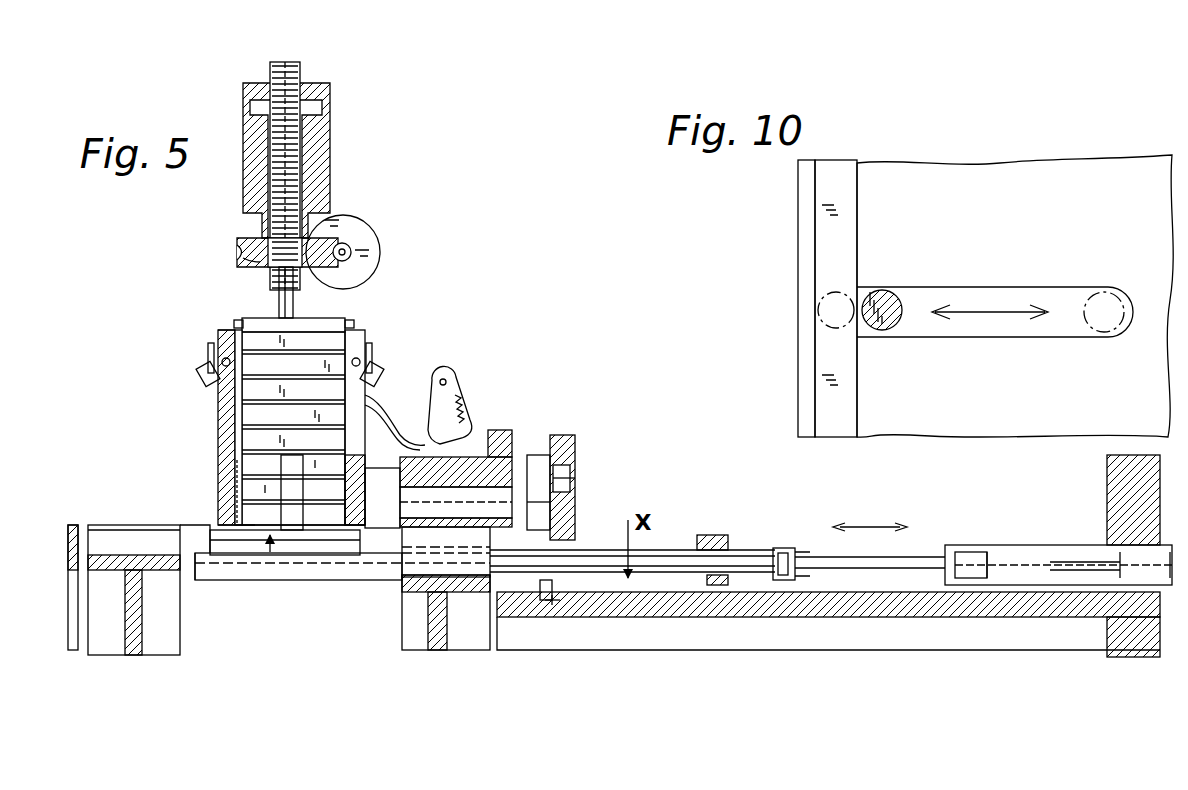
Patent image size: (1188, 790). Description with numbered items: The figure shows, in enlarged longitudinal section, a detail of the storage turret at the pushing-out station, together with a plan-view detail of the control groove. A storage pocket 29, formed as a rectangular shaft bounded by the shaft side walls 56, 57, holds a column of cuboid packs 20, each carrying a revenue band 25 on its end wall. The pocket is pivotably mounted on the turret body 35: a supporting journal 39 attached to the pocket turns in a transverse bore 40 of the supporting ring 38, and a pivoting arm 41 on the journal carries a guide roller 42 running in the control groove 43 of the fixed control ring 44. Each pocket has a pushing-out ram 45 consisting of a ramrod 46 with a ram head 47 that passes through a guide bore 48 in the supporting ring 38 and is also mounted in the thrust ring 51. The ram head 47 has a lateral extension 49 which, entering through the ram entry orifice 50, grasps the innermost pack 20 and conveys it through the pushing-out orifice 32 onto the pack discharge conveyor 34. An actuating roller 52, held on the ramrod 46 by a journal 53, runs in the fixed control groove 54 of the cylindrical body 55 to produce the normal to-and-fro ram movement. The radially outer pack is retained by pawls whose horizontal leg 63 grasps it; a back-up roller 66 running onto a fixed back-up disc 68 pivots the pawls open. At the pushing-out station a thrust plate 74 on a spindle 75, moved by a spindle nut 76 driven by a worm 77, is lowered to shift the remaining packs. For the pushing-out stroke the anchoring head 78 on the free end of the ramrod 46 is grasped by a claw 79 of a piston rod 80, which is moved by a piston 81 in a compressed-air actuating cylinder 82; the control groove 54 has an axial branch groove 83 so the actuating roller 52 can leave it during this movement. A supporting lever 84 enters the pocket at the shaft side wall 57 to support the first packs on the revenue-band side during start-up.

In FIG. 5, the cuboid pack 20 is at (250, 447).
In FIG. 5, the revenue band 25 is at (365, 345).
In FIG. 5, the storage pocket 29 is at (162, 382).
In FIG. 5, the pushing-out orifice 32 is at (238, 526).
In FIG. 5, the pack discharge conveyor 34 is at (103, 565).
In FIG. 5, the turret body 35 is at (546, 352).
In FIG. 5, the supporting ring 38 is at (468, 448).
In FIG. 5, the supporting journal 39 is at (517, 462).
In FIG. 5, the transverse bore 40 is at (478, 482).
In FIG. 5, the pivoting arm 41 is at (540, 506).
In FIG. 5, the guide roller 42 is at (560, 470).
In FIG. 5, the control groove 43 is at (566, 488).
In FIG. 5, the control ring 44 is at (575, 522).
In FIG. 5, the pushing-out ram 45 is at (752, 546).
In FIG. 5, the ramrod 46 is at (513, 567).
In FIG. 5, the ram head 47 is at (232, 568).
In FIG. 5, the guide bore 48 is at (460, 538).
In FIG. 5, the lateral extension 49 is at (270, 555).
In FIG. 5, the ram entry orifice 50 is at (350, 572).
In FIG. 5, the thrust ring 51 is at (722, 538).
In FIG. 5, the actuating roller 52 is at (560, 602).
In FIG. 10, the actuating roller 52 is at (870, 315).
In FIG. 5, the journal 53 is at (552, 597).
In FIG. 5, the control groove 54 is at (540, 597).
In FIG. 10, the control groove 54 is at (838, 437).
In FIG. 5, the cylindrical body 55 is at (1130, 630).
In FIG. 10, the cylindrical body 55 is at (1108, 163).
In FIG. 5, the shaft side wall 56 is at (226, 427).
In FIG. 5, the shaft side wall 57 is at (403, 426).
In FIG. 5, the horizontal leg 63 is at (236, 330).
In FIG. 5, the back-up roller 66 is at (204, 382).
In FIG. 5, the back-up disc 68 is at (208, 346).
In FIG. 5, the thrust plate 74 is at (340, 264).
In FIG. 5, the spindle 75 is at (300, 160).
In FIG. 5, the spindle nut 76 is at (238, 262).
In FIG. 5, the worm 77 is at (347, 250).
In FIG. 5, the anchoring head 78 is at (783, 582).
In FIG. 5, the claw 79 is at (792, 582).
In FIG. 5, the piston rod 80 is at (905, 570).
In FIG. 5, the piston 81 is at (990, 590).
In FIG. 5, the actuating cylinder 82 is at (1010, 545).
In FIG. 5, the branch groove 83 is at (650, 605).
In FIG. 5, the supporting lever 84 is at (472, 338).